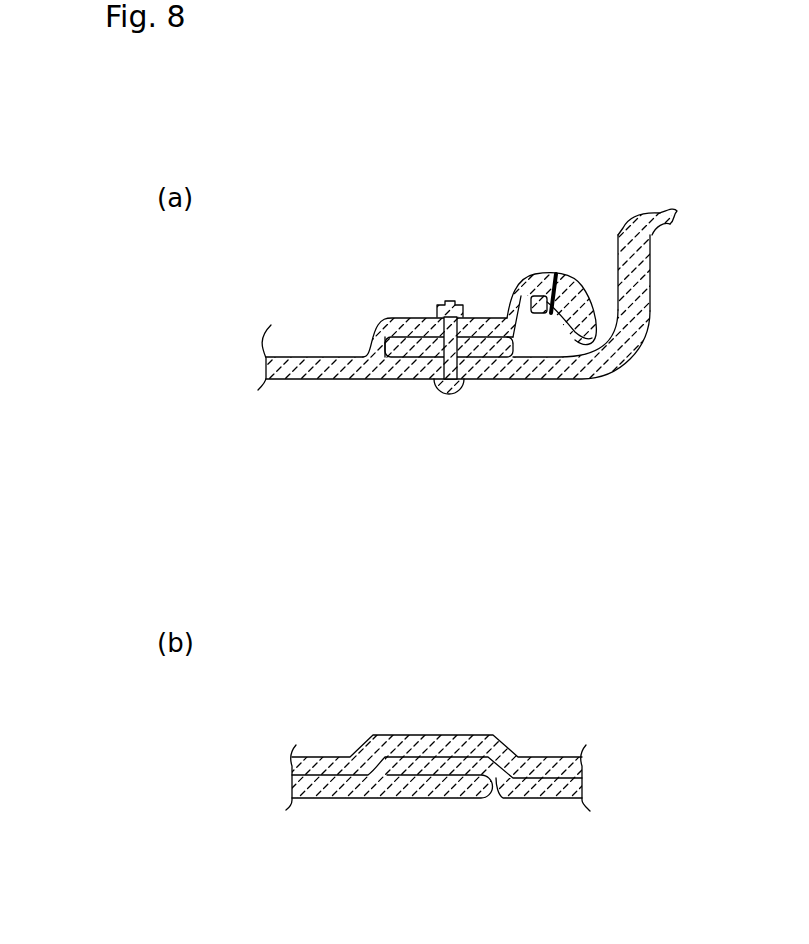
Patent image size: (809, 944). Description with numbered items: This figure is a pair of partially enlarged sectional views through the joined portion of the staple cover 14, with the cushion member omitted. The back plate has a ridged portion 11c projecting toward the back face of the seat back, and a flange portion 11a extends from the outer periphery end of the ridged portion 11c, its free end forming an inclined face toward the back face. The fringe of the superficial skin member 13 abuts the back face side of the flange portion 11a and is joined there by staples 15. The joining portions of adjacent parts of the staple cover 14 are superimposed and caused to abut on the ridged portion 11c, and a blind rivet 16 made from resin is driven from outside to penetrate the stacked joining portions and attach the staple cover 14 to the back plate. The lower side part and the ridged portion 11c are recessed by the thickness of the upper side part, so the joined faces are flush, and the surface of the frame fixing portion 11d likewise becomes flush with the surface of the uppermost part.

The flange portion 11a is at (560, 295).
The ridged portion 11c is at (410, 317).
The frame fixing portion 11d is at (307, 377).
The superficial skin member 13 is at (672, 224).
The staple cover 14 is at (547, 357).
The staple 15 is at (568, 352).
The blind rivet 16 is at (448, 394).